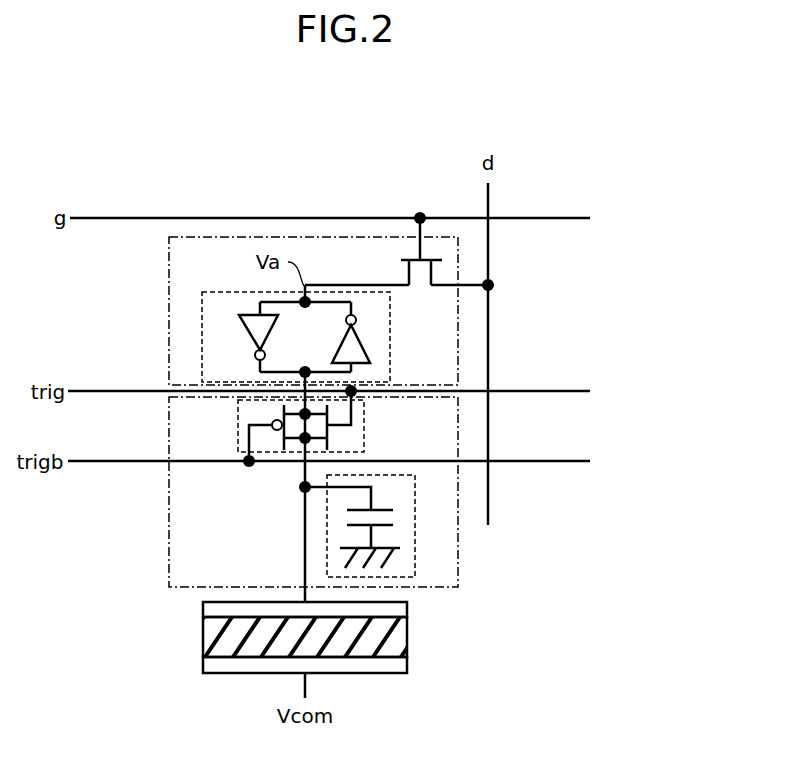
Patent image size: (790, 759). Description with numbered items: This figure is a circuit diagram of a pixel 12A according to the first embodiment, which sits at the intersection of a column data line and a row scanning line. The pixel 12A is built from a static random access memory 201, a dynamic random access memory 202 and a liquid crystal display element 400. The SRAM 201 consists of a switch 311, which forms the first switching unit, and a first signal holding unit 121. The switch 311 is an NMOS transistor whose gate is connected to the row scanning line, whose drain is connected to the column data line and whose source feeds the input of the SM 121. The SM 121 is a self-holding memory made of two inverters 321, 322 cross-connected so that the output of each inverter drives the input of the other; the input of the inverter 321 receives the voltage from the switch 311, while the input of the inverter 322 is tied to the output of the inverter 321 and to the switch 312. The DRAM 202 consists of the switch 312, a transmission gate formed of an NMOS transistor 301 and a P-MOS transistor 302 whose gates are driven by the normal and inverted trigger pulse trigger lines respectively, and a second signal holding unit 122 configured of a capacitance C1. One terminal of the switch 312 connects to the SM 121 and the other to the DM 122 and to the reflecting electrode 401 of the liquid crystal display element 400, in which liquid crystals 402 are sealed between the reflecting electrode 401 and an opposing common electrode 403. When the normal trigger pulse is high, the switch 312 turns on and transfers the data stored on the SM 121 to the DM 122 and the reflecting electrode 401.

The pixel 12A is at (410, 165).
The static random access memory (SRAM) 201 is at (458, 375).
The dynamic random access memory (DRAM) 202 is at (168, 532).
The switch 311 is at (440, 273).
The first signal holding unit (SM) 121 is at (266, 436).
The inverter 321 is at (245, 333).
The inverter 322 is at (362, 340).
The switch 312 is at (372, 426).
The NMOS transistor 301 is at (328, 433).
The P-MOS transistor 302 is at (283, 416).
The second signal holding unit (DM) 122 is at (435, 526).
The capacitance C1 is at (398, 517).
The liquid crystal display element 400 is at (294, 647).
The reflecting electrode 401 is at (407, 605).
The liquid crystals 402 is at (407, 635).
The common electrode 403 is at (407, 665).